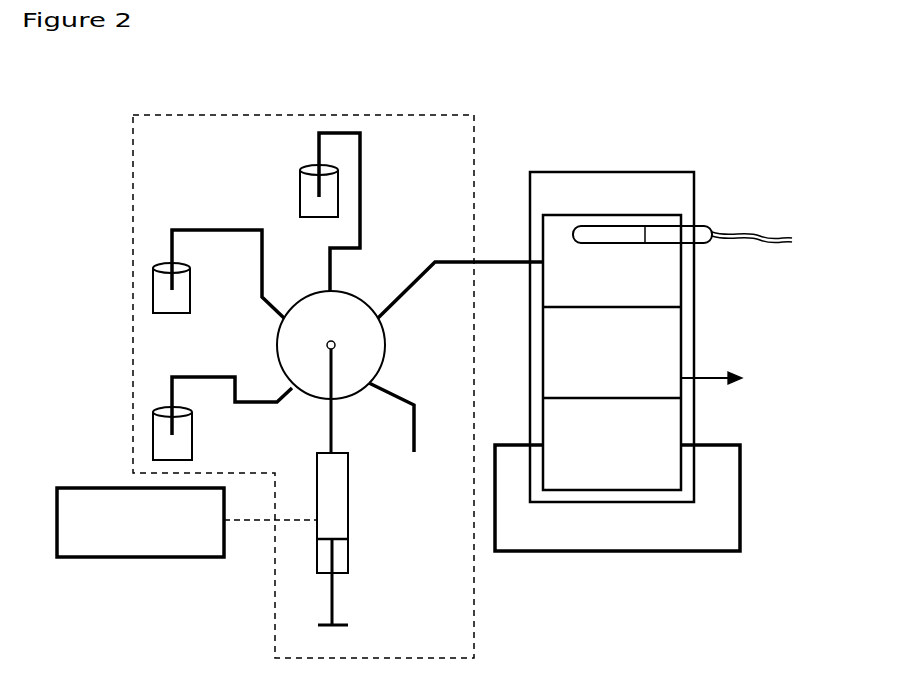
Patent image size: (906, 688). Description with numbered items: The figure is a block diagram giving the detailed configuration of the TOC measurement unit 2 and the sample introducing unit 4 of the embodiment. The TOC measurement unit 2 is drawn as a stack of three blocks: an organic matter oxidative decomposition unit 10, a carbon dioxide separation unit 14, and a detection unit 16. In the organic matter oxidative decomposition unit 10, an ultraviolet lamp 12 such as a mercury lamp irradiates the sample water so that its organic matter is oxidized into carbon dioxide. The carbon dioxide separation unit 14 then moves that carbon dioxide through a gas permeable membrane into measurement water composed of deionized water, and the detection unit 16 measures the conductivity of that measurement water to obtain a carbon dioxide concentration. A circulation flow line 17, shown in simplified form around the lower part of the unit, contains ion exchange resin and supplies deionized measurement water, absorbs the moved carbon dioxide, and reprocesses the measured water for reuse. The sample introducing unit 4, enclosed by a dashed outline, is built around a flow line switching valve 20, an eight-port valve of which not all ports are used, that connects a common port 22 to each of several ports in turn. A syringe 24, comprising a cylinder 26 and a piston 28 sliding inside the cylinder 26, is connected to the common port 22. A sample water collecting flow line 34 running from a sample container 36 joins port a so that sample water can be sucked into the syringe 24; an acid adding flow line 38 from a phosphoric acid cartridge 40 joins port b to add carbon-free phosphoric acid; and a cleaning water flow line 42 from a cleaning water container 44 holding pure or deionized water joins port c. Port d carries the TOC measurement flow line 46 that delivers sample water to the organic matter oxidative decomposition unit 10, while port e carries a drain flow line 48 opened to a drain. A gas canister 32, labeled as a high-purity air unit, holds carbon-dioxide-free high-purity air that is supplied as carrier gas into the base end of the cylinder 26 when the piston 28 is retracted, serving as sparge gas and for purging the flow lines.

The TOC measurement unit 2 is at (694, 172).
The sample introducing unit 4 is at (461, 113).
The organic matter oxidative decomposition unit 10 is at (683, 270).
The ultraviolet lamp 12 is at (700, 232).
The carbon dioxide separation unit 14 is at (686, 349).
The detection unit 16 is at (686, 432).
The circulation flow line 17 is at (700, 552).
The flow line switching valve 20 is at (387, 336).
The common port 22 is at (336, 338).
The syringe 24 is at (356, 553).
The cylinder 26 is at (349, 491).
The piston 28 is at (346, 530).
The gas canister 32 is at (65, 488).
The sample water collecting flow line 34 is at (222, 375).
The sample container 36 is at (157, 427).
The acid adding flow line 38 is at (197, 228).
The phosphoric acid cartridge 40 is at (158, 292).
The cleaning water flow line 42 is at (364, 183).
The cleaning water container 44 is at (301, 190).
The TOC measurement flow line 46 is at (447, 260).
The drain flow line 48 is at (418, 417).